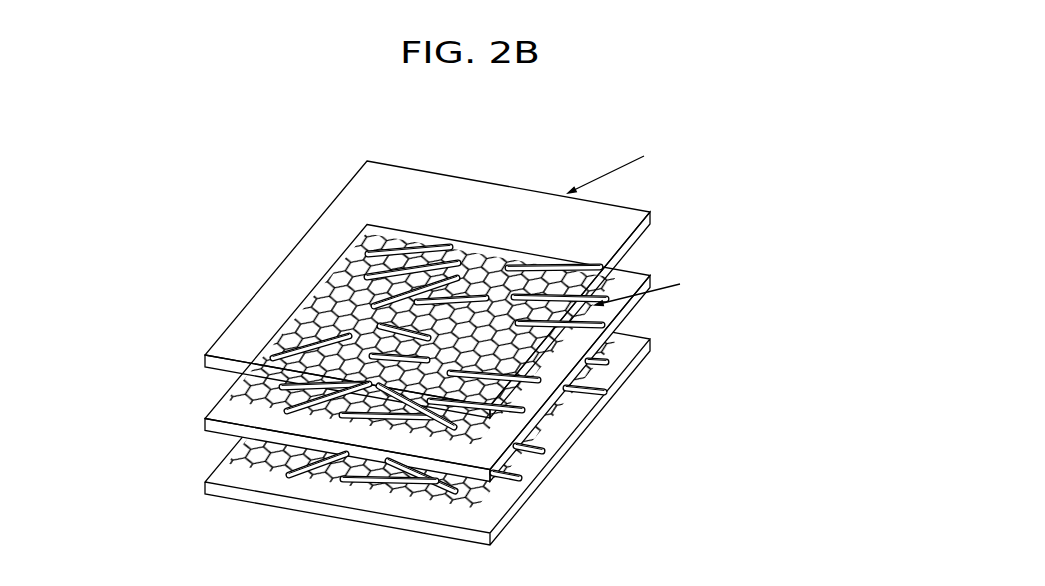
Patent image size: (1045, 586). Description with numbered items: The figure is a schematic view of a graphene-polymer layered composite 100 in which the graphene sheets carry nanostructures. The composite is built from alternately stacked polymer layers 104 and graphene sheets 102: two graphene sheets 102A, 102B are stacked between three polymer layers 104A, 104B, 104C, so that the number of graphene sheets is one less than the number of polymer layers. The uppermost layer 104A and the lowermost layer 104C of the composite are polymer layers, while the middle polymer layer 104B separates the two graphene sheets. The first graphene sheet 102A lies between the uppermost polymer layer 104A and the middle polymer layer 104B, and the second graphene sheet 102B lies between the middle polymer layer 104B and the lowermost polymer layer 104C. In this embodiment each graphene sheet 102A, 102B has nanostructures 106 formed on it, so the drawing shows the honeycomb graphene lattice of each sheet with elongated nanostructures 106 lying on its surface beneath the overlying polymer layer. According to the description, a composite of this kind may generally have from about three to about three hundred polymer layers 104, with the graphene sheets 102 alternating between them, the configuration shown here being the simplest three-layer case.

The graphene-polymer layered composite 100 is at (428, 126).
The graphene sheets 102 is at (677, 432).
The graphene sheet 102A is at (533, 370).
The graphene sheet 102B is at (452, 432).
The polymer layers 104 is at (97, 353).
The polymer layer 104A is at (205, 361).
The polymer layer 104B is at (205, 425).
The polymer layer 104C is at (205, 488).
The nanostructures 106 is at (357, 481).